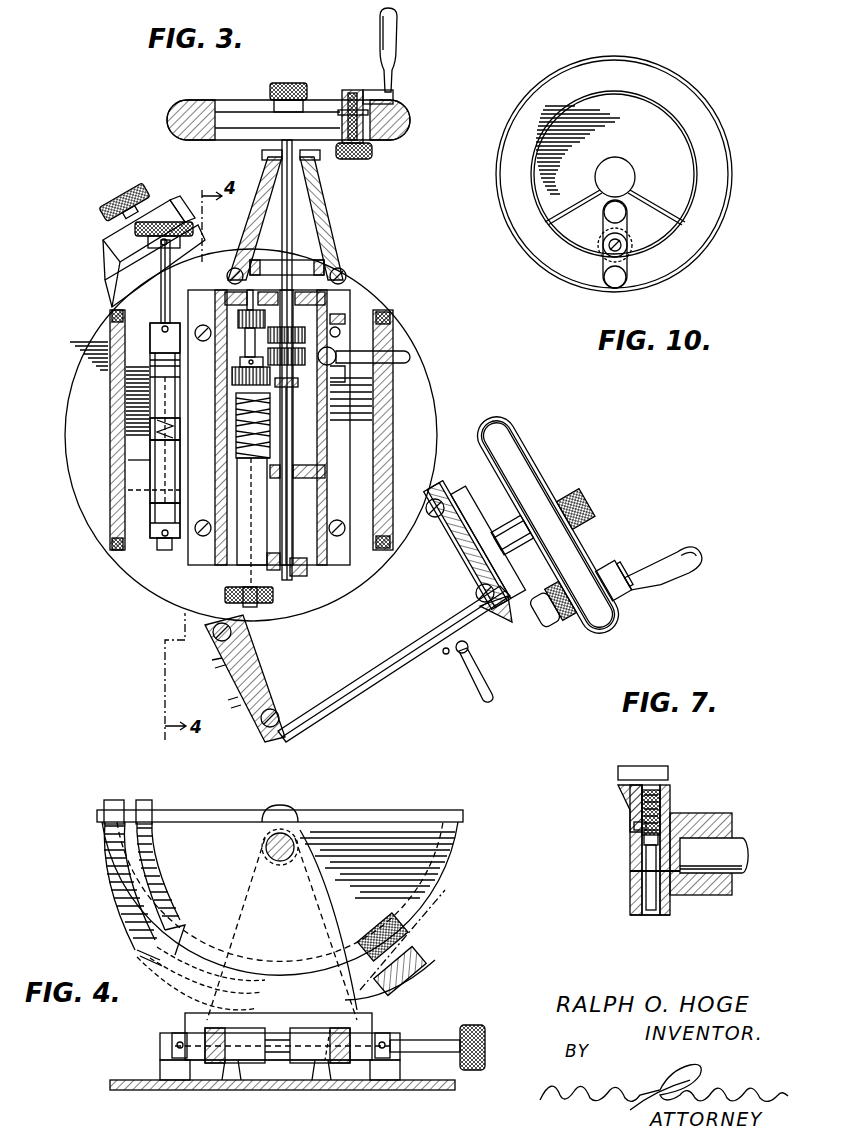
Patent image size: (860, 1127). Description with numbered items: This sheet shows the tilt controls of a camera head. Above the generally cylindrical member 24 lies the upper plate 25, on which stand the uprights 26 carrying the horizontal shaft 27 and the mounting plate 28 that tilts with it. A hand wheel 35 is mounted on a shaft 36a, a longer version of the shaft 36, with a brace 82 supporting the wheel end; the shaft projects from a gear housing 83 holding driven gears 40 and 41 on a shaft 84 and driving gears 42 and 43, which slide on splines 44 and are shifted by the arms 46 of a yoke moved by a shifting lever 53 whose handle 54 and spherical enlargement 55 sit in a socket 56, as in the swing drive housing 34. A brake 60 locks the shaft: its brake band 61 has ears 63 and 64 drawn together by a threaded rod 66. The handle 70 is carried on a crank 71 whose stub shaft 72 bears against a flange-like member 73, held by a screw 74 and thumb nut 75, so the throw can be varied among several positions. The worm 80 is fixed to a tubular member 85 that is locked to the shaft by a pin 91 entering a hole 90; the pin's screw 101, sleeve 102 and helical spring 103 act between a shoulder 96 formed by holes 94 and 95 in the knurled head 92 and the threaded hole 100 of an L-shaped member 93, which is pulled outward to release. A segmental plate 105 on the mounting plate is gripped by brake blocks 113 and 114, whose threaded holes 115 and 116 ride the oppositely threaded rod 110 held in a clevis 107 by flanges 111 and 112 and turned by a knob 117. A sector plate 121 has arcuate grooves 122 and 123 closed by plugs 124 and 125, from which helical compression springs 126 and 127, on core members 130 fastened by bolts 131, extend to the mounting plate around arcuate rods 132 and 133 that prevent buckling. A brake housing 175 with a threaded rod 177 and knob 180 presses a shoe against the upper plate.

In FIG. 3, the cylindrical member 24 is at (104, 592).
In FIG. 4, the plate 25 is at (110, 1082).
In FIG. 3, the uprights 26 is at (120, 525).
In FIG. 4, the uprights 26 is at (320, 830).
In FIG. 4, the shaft 27 is at (281, 832).
In FIG. 4, the mounting plate 28 is at (405, 812).
In FIG. 3, the housing 34 is at (364, 680).
In FIG. 4, the housing 34 is at (135, 812).
In FIG. 3, the hand wheel 35 is at (405, 126).
In FIG. 10, the hand wheel 35 is at (498, 207).
In FIG. 3, the shaft 36 is at (525, 520).
In FIG. 10, the shaft 36 is at (618, 172).
In FIG. 3, the shaft 36a is at (282, 205).
In FIG. 3, the spur gear 40 is at (238, 322).
In FIG. 3, the spur gear 41 is at (240, 370).
In FIG. 3, the gear 42 is at (330, 296).
In FIG. 3, the gear 43 is at (347, 372).
In FIG. 3, the splines 44 is at (286, 462).
In FIG. 3, the arms 46 is at (290, 400).
In FIG. 3, the shifting lever 53 is at (345, 336).
In FIG. 3, the handle 54 is at (410, 360).
In FIG. 3, the spherical enlargement 55 is at (337, 356).
In FIG. 3, the socket 56 is at (340, 330).
In FIG. 3, the brake 60 is at (538, 626).
In FIG. 3, the brake band 61 is at (324, 268).
In FIG. 3, the ear 63 is at (490, 560).
In FIG. 3, the ear 64 is at (480, 527).
In FIG. 3, the threaded rod 66 is at (520, 530).
In FIG. 3, the handle 70 is at (684, 563).
In FIG. 10, the handle 70 is at (626, 286).
In FIG. 3, the crank 71 is at (395, 100).
In FIG. 10, the crank 71 is at (604, 272).
In FIG. 3, the stub shaft 72 is at (338, 108).
In FIG. 3, the flange-like member 73 is at (342, 128).
In FIG. 3, the screw 74 is at (352, 92).
In FIG. 10, the screw 74 is at (605, 245).
In FIG. 3, the thumb nut 75 is at (372, 155).
In FIG. 10, the thumb nut 75 is at (628, 250).
In FIG. 3, the worm 80 is at (235, 426).
In FIG. 3, the brace 82 is at (325, 237).
In FIG. 3, the gear housing 83 is at (345, 560).
In FIG. 3, the shaft 84 is at (232, 571).
In FIG. 7, the shaft 84 is at (742, 851).
In FIG. 3, the tubular member 85 is at (300, 570).
In FIG. 7, the tubular member 85 is at (728, 816).
In FIG. 7, the hole 90 is at (644, 866).
In FIG. 7, the pin 91 is at (642, 842).
In FIG. 3, the knurled head 92 is at (275, 598).
In FIG. 7, the knurled head 92 is at (632, 912).
In FIG. 3, the L-shaped member 93 is at (250, 608).
In FIG. 7, the L-shaped member 93 is at (620, 800).
In FIG. 7, the hole 94 is at (660, 912).
In FIG. 7, the hole 95 is at (653, 792).
In FIG. 7, the shoulder 96 is at (662, 800).
In FIG. 7, the hole 100 is at (650, 790).
In FIG. 7, the screw 101 is at (636, 800).
In FIG. 7, the tubular sleeve 102 is at (636, 828).
In FIG. 7, the helical spring 103 is at (671, 812).
In FIG. 4, the segmental plate 105 is at (280, 941).
In FIG. 3, the clevis 107 is at (150, 342).
In FIG. 4, the clevis 107 is at (300, 1072).
In FIG. 3, the threaded rod 110 is at (160, 290).
In FIG. 4, the threaded rod 110 is at (430, 1045).
In FIG. 3, the flange 111 is at (170, 318).
In FIG. 4, the flange 111 is at (385, 1035).
In FIG. 3, the flange 112 is at (162, 545).
In FIG. 4, the flange 112 is at (170, 1040).
In FIG. 3, the brake block 113 is at (125, 420).
In FIG. 4, the brake block 113 is at (335, 1052).
In FIG. 3, the brake block 114 is at (150, 491).
In FIG. 4, the brake block 114 is at (205, 1050).
In FIG. 3, the threaded hole 115 is at (150, 400).
In FIG. 4, the threaded hole 115 is at (330, 1030).
In FIG. 3, the threaded hole 116 is at (150, 461).
In FIG. 4, the threaded hole 116 is at (240, 1040).
In FIG. 3, the knob 117 is at (112, 276).
In FIG. 4, the knob 117 is at (486, 1046).
In FIG. 4, the sector plate 121 is at (420, 936).
In FIG. 4, the arcuate groove 122 is at (170, 942).
In FIG. 4, the arcuate groove 123 is at (195, 958).
In FIG. 4, the plug 124 is at (385, 935).
In FIG. 4, the plug 125 is at (421, 972).
In FIG. 4, the helical compression spring 126 is at (152, 897).
In FIG. 4, the helical compression spring 127 is at (145, 954).
In FIG. 4, the core member 130 is at (105, 838).
In FIG. 4, the bolt 131 is at (430, 956).
In FIG. 4, the arcuate rod 132 is at (150, 872).
In FIG. 4, the arcuate rod 133 is at (116, 910).
In FIG. 3, the brake housing 175 is at (105, 250).
In FIG. 3, the threaded rod 177 is at (150, 202).
In FIG. 3, the knob 180 is at (132, 192).